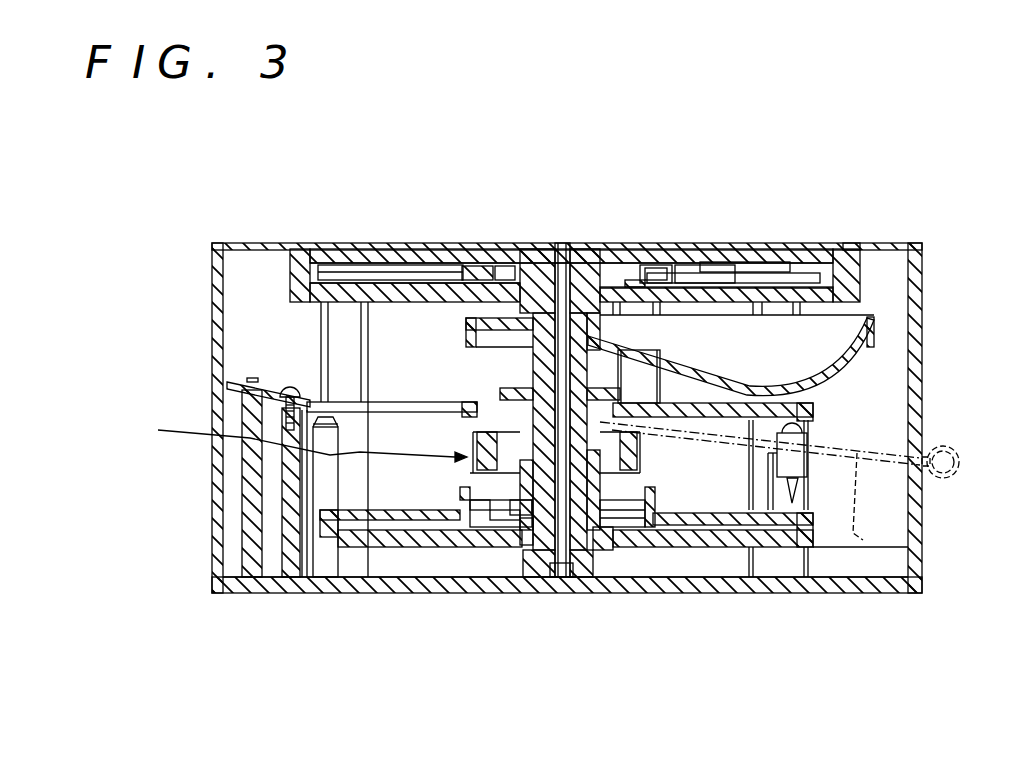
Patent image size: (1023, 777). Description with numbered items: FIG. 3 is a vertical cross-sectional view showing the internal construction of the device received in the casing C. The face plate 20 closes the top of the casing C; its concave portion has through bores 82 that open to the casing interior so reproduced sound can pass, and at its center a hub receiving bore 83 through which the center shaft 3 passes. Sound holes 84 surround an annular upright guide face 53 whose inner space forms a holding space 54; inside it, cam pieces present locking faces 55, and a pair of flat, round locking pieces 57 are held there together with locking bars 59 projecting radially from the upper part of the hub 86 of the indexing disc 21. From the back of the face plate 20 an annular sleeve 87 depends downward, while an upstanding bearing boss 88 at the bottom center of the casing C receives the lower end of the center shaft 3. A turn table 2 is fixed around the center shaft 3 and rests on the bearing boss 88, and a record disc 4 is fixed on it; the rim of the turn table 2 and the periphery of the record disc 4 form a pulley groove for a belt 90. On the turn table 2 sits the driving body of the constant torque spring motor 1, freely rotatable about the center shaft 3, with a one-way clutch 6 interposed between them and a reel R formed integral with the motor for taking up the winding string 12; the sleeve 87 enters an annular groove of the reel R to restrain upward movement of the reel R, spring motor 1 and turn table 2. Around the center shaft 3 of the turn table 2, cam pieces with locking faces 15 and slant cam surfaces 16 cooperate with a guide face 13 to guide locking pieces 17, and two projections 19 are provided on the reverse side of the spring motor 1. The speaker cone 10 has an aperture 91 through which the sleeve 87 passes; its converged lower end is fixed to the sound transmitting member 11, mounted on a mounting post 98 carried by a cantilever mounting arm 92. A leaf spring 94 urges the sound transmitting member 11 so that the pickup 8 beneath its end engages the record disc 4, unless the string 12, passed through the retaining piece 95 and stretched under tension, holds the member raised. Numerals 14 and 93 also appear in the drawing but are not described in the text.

The constant torque spring motor 1 is at (162, 442).
The turn table 2 is at (567, 463).
The center shaft 3 is at (569, 461).
The record disc 4 is at (421, 583).
The one-way clutch 6 is at (498, 568).
The pickup 8 is at (794, 540).
The speaker cone 10 is at (793, 356).
The sound transmitting member 11 is at (809, 391).
The winding string 12 is at (883, 557).
The guide face 13 is at (444, 568).
The sleeve 14 is at (616, 603).
The locking face 15 is at (502, 547).
The slant cam surface 16 is at (643, 583).
The locking pieces 17 is at (472, 582).
The projections 19 is at (500, 598).
The face plate 20 is at (567, 212).
The indexing disc 21 is at (745, 231).
The guide face 53 is at (712, 227).
The holding space 54 is at (554, 345).
The locking face 55 is at (673, 238).
The locking pieces 57 is at (449, 217).
The locking bars 59 is at (489, 218).
The through bores 82 is at (563, 229).
The hub receiving bore 83 is at (522, 257).
The sound holes 84 is at (723, 242).
The hub 86 is at (598, 341).
The annular sleeve 87 is at (496, 295).
The bearing boss 88 is at (555, 602).
The belt 90 is at (306, 540).
The aperture 91 is at (617, 253).
The mounting arm 92 is at (312, 353).
The arm 93 is at (222, 375).
The leaf spring 94 is at (390, 228).
The retaining piece 95 is at (803, 438).
The mounting post 98 is at (221, 483).
The reel R is at (636, 241).
The casing C is at (940, 386).